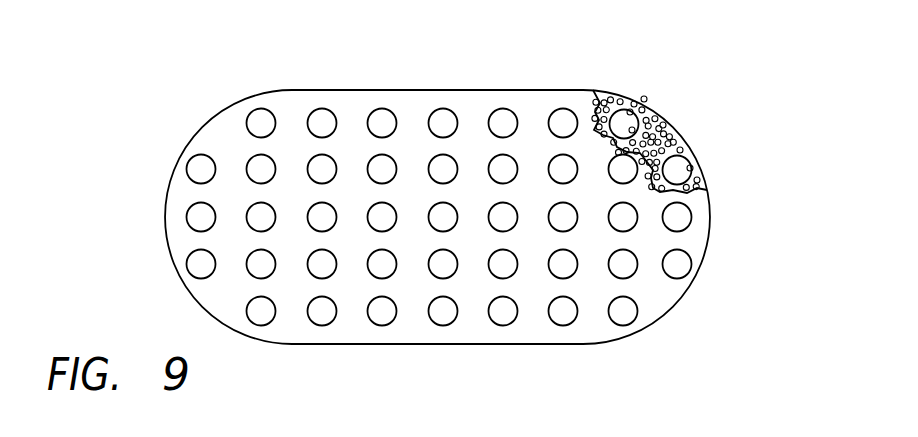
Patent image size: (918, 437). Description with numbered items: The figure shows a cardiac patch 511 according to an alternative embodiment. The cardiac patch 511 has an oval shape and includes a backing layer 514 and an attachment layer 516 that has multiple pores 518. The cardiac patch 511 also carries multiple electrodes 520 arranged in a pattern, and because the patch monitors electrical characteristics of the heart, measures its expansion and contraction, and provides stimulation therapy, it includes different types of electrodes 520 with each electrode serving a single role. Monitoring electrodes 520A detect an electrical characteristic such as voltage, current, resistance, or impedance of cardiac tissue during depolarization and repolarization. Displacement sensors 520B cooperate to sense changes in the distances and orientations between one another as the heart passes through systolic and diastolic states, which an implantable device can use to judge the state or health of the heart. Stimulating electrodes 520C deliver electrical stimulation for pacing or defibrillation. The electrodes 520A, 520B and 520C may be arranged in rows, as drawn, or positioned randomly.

The cardiac patch 511 is at (502, 100).
The backing layer 514 is at (670, 300).
The attachment layer 516 is at (702, 175).
The pores 518 is at (678, 138).
The electrodes 520 is at (443, 124).
The monitoring electrodes 520A is at (260, 312).
The displacement sensors 520B is at (322, 124).
The stimulating electrodes 520C is at (200, 264).